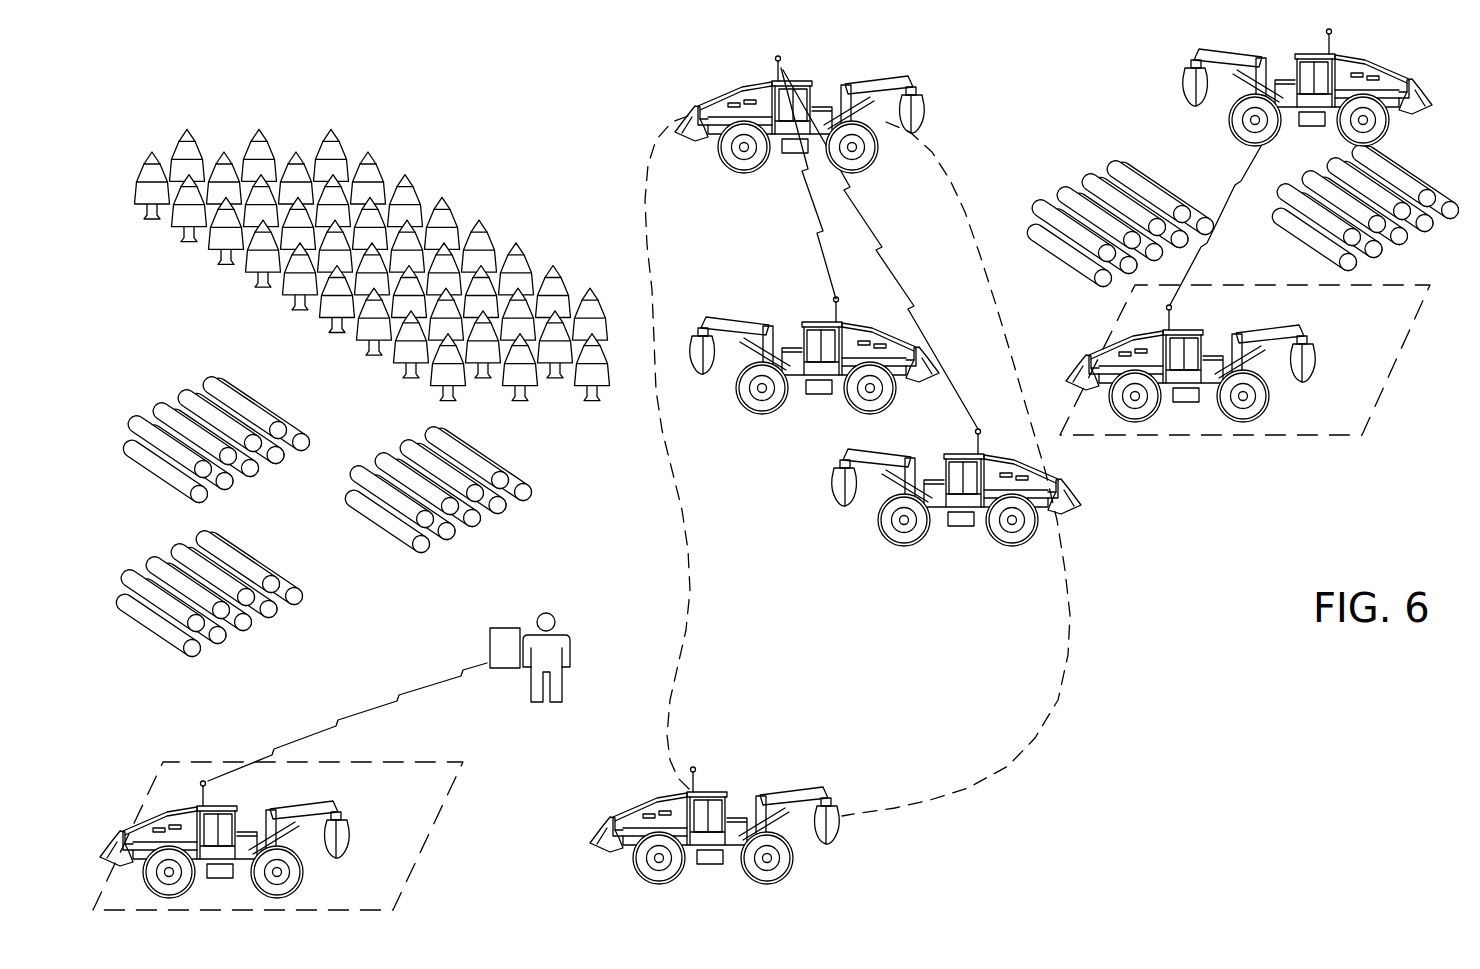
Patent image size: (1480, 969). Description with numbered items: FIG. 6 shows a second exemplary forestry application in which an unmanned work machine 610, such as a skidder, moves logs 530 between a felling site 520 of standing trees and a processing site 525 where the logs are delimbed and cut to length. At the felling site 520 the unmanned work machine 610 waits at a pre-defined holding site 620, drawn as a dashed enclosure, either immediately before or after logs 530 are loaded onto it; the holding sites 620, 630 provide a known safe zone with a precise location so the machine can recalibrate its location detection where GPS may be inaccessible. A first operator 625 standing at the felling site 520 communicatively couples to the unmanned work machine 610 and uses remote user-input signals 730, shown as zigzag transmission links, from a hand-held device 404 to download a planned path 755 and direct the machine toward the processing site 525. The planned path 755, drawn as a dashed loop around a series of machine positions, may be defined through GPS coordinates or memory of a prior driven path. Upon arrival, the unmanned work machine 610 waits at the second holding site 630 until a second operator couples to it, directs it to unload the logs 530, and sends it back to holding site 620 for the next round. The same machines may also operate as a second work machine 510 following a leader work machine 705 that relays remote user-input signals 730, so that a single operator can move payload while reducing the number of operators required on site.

The felling site 520 is at (270, 110).
The logs 530 is at (172, 538).
The second work machine 510 is at (146, 720).
The leader work machine 705 is at (193, 720).
The holding site 620 is at (425, 801).
The second holding site 630 is at (1393, 326).
The unmanned work machine 610 is at (240, 812).
The processing site 525 is at (1458, 92).
The remote user-input signals 730 is at (368, 708).
The planned path 755 is at (980, 800).
The hand-held device 404 is at (502, 642).
The first operator 625 is at (553, 640).